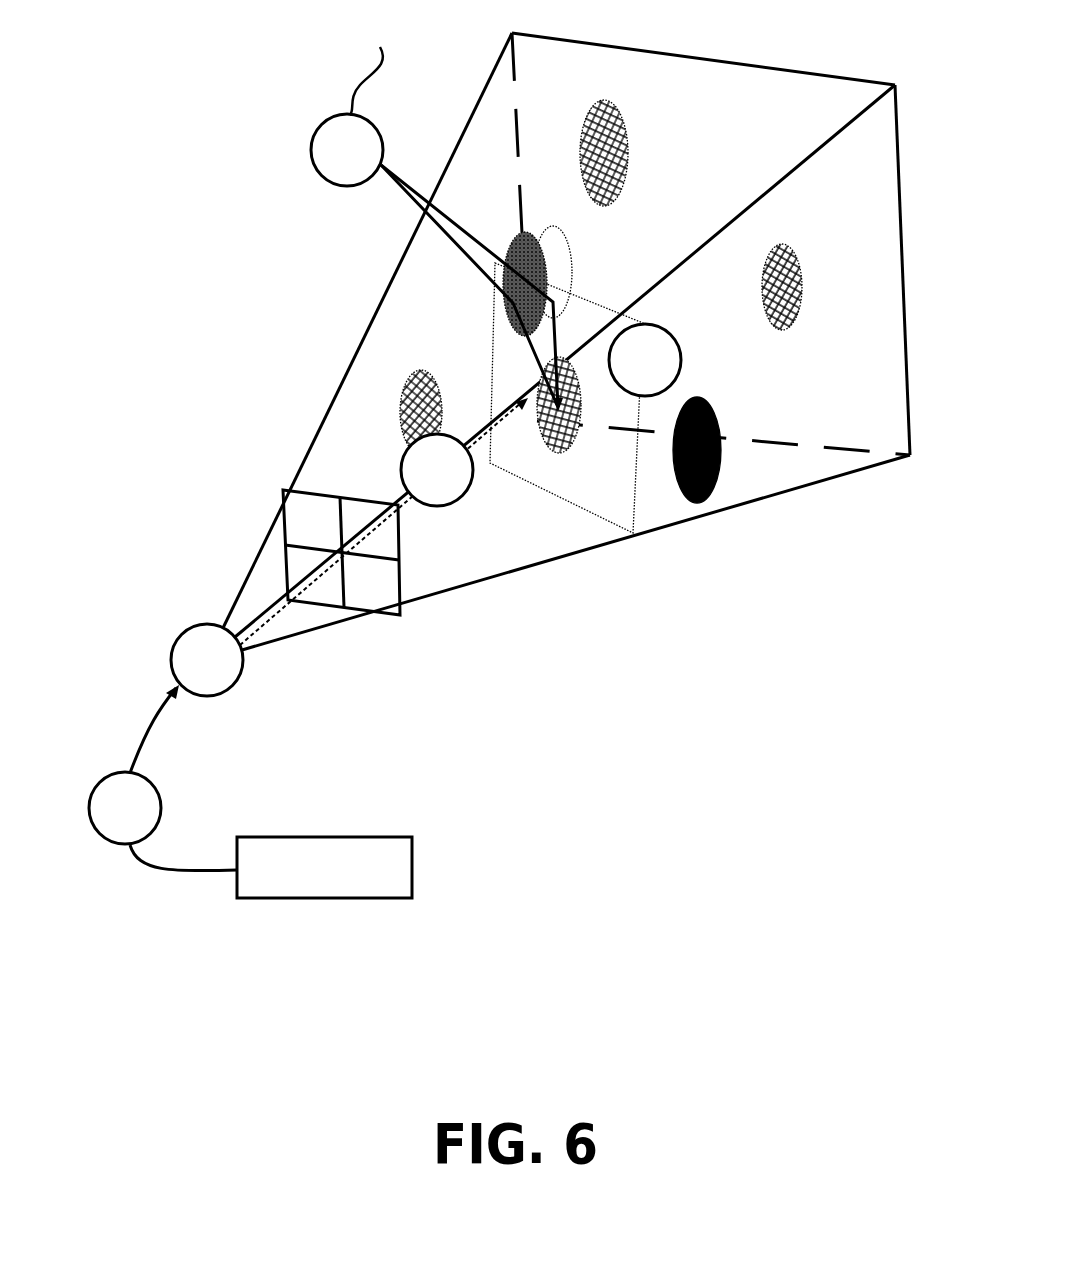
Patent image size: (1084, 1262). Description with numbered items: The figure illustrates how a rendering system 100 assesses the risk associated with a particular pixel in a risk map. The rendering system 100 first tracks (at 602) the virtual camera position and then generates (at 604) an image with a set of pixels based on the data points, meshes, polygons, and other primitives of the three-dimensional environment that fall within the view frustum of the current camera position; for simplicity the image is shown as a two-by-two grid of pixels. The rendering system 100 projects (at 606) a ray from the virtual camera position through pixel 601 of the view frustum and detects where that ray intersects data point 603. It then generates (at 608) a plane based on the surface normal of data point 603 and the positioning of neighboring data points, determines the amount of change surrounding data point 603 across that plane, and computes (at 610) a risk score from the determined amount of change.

The rendering system 100 is at (324, 867).
The pixel 601 is at (397, 523).
The tracking the virtual camera position 602 is at (125, 808).
The data point 603 is at (538, 433).
The generating an image 604 is at (207, 660).
The projecting a ray 606 is at (437, 470).
The generating a plane 608 is at (645, 360).
The computing a risk score 610 is at (360, 103).